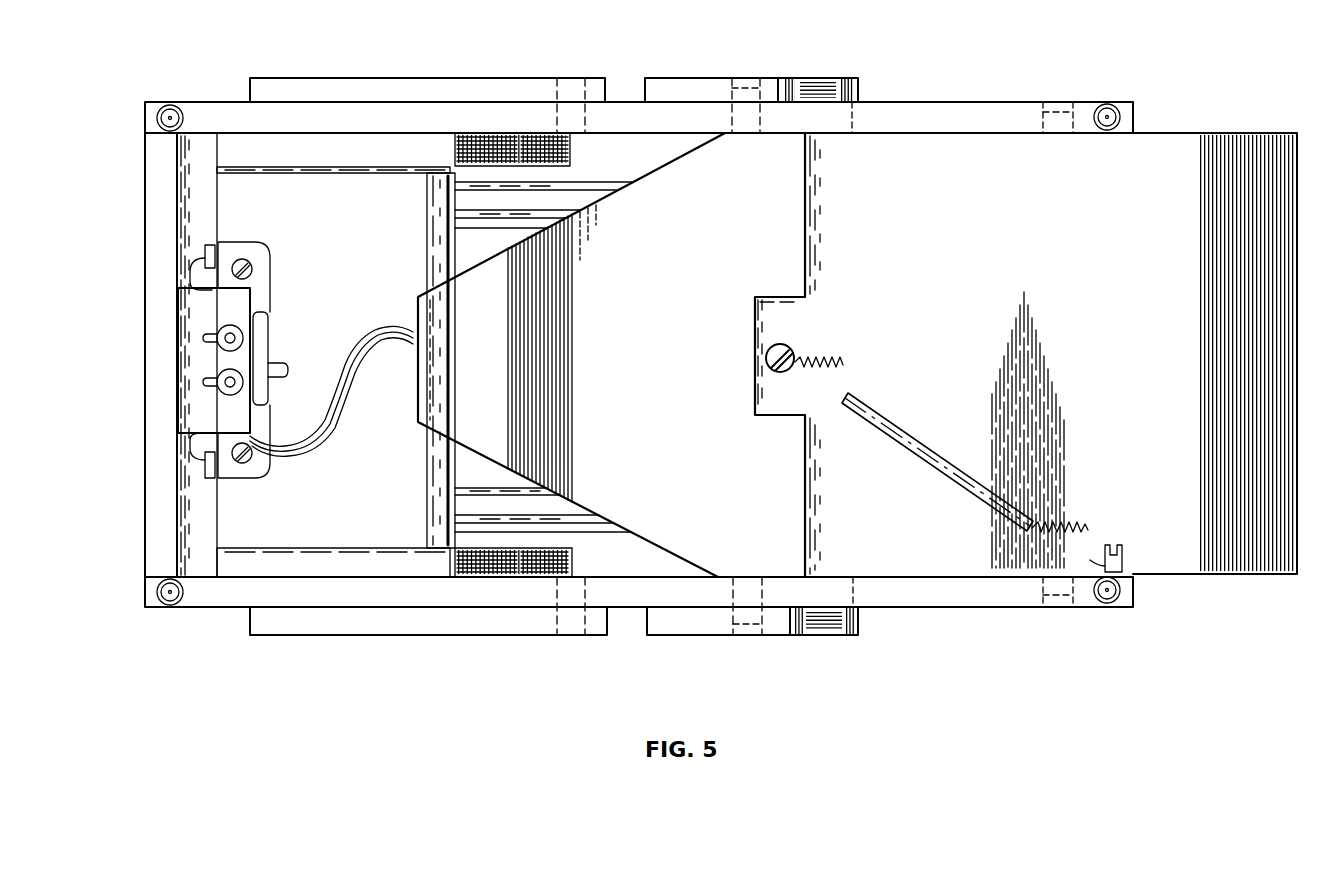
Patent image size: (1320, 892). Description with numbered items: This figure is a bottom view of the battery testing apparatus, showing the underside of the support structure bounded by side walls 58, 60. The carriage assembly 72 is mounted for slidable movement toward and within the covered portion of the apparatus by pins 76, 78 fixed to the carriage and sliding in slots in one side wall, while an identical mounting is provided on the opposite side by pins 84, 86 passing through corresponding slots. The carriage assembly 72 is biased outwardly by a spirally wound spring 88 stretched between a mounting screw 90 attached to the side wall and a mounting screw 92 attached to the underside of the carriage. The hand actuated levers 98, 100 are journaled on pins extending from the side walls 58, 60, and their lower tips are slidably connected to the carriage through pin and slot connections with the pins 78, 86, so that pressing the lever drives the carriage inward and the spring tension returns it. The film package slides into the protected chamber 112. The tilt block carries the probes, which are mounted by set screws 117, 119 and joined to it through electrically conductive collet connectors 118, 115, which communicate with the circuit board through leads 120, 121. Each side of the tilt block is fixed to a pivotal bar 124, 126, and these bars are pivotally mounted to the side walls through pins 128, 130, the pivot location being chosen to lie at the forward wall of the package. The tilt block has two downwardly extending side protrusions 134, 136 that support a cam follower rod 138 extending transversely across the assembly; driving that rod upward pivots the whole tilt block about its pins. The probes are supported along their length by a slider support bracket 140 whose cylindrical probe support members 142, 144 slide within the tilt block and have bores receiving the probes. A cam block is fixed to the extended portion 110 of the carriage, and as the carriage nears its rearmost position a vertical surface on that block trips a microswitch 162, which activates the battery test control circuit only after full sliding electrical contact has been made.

The side wall 58 is at (222, 606).
The side wall 60 is at (222, 106).
The carriage assembly 72 is at (1215, 142).
The pin 76 is at (1060, 104).
The pin 78 is at (745, 92).
The pin 84 is at (1060, 612).
The pin 86 is at (745, 632).
The spirally wound spring 88 is at (836, 386).
The mounting screw 90 is at (1126, 578).
The mounting screw 92 is at (782, 346).
The lever 98 is at (804, 80).
The lever 100 is at (822, 624).
The extended portion of carriage 110 is at (482, 292).
The chamber 112 is at (330, 326).
The collet connector 115 is at (200, 470).
The set screw 117 is at (250, 266).
The collet connector 118 is at (200, 248).
The set screw 119 is at (252, 470).
The lead 120 is at (190, 276).
The lead 121 is at (195, 445).
The pivotal bar 124 is at (440, 90).
The pivotal bar 126 is at (410, 630).
The pin 128 is at (578, 95).
The pin 130 is at (568, 628).
The side protrusion 134 is at (340, 174).
The side protrusion 136 is at (320, 554).
The cam follower rod 138 is at (428, 203).
The slider support bracket 140 is at (577, 538).
The probe support member 142 is at (580, 196).
The probe support member 144 is at (543, 496).
The microswitch 162 is at (262, 353).